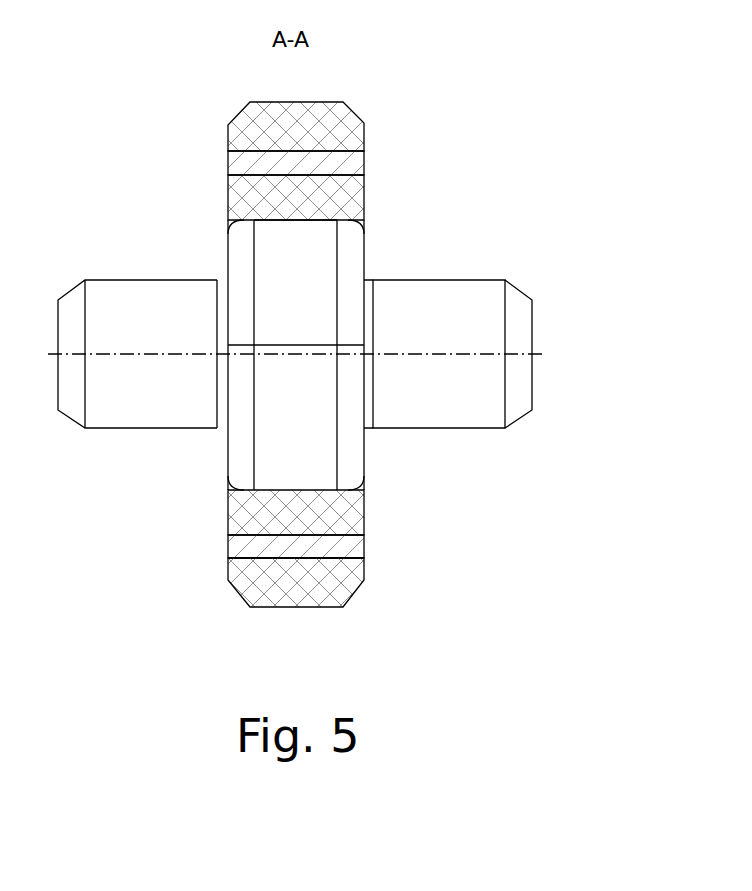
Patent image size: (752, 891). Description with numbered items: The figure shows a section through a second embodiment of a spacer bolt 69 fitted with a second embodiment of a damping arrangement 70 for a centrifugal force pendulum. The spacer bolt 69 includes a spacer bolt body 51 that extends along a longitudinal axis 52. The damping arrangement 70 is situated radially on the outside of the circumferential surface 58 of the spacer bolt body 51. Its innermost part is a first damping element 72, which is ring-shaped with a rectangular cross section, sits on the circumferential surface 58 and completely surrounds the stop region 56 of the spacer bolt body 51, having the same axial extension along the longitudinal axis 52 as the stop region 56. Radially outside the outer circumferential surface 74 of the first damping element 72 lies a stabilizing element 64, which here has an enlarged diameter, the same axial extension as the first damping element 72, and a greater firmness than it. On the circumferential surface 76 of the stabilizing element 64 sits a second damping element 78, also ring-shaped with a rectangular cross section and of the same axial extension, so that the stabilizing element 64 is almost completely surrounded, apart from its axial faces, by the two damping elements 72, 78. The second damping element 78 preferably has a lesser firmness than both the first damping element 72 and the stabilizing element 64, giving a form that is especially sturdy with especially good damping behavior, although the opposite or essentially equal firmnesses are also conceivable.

The damping arrangement 70 is at (210, 80).
The first damping element 72 is at (364, 190).
The circumferential surface 58 is at (280, 222).
The stop region 56 is at (308, 346).
The spacer bolt body 51 is at (470, 412).
The longitudinal axis 52 is at (510, 370).
The outer circumferential surface 74 is at (318, 530).
The stabilizing element 64 is at (355, 545).
The circumferential surface 76 is at (265, 553).
The second damping element 78 is at (345, 588).
The spacer bolt 69 is at (474, 572).